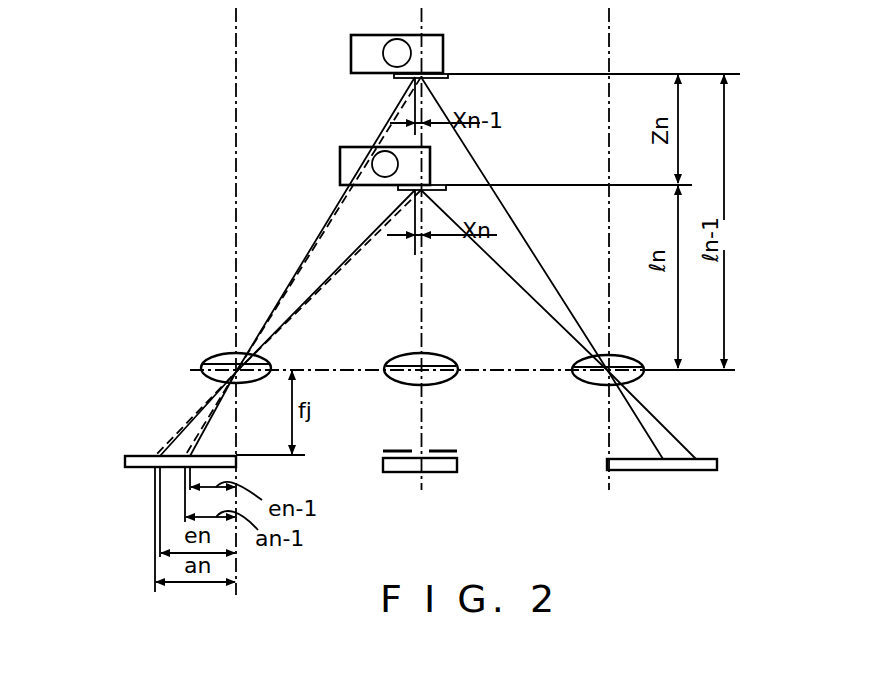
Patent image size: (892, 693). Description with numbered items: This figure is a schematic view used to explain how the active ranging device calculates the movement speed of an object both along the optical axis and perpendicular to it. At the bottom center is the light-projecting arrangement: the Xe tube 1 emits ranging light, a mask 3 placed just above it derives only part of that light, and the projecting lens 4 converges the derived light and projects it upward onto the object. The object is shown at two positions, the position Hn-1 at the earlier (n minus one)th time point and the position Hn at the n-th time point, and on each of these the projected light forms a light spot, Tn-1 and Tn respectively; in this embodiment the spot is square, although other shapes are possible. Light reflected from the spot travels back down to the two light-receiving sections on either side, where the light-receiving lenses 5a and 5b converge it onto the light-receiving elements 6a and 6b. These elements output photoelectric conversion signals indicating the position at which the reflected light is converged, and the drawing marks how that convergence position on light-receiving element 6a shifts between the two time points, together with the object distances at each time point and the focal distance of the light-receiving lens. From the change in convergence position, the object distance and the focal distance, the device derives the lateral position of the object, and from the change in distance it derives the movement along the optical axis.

The Xe tube 1 is at (440, 473).
The mask 3 is at (439, 450).
The projecting lens 4 is at (441, 356).
The light-receiving lens 5a is at (214, 357).
The light-receiving lens 5b is at (627, 356).
The light-receiving element 6a is at (237, 460).
The light-receiving element 6b is at (607, 464).
The position of the object at the (n−1)th time point Hn-1 is at (351, 45).
The position of the object at the n-th time point Hn is at (340, 162).
The light spot on the object at the (n−1)th time point Tn-1 is at (447, 75).
The light spot on the object at the n-th time point Tn is at (446, 186).